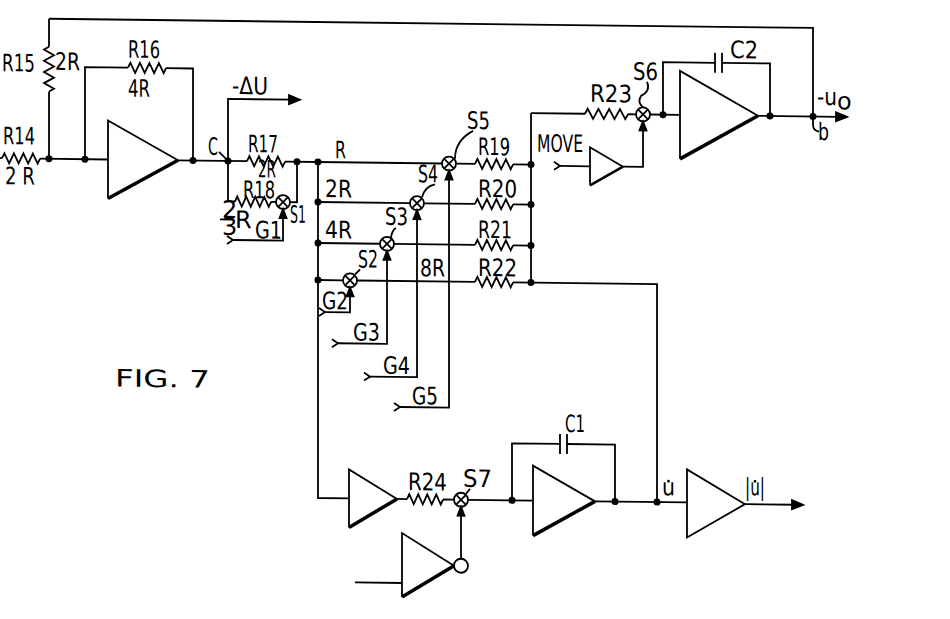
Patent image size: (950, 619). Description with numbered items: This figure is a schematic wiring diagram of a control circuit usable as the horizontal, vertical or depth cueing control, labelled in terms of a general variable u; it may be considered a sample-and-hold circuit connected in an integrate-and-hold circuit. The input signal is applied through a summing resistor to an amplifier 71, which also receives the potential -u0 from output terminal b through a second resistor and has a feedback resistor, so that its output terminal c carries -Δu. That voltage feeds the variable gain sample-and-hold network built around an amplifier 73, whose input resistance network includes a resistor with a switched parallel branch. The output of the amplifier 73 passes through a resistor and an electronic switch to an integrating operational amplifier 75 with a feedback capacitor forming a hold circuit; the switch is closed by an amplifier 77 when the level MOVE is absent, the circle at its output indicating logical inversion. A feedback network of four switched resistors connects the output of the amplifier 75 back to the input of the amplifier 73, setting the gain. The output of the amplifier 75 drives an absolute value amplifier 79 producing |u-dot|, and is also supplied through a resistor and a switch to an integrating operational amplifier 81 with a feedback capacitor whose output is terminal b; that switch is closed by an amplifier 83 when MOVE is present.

The amplifier 71 is at (136, 176).
The amplifier 73 is at (380, 512).
The integrating operational amplifier 75 is at (567, 509).
The amplifier 77 is at (432, 576).
The absolute value amplifier 79 is at (711, 521).
The integrating operational amplifier 81 is at (722, 124).
The amplifier 83 is at (615, 176).